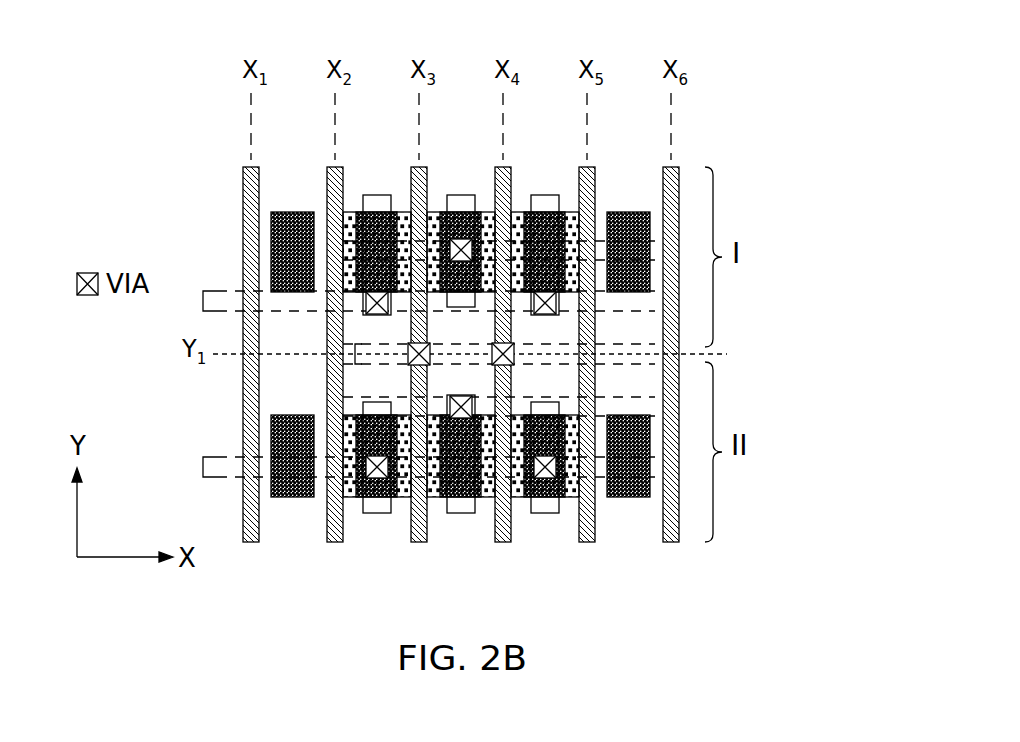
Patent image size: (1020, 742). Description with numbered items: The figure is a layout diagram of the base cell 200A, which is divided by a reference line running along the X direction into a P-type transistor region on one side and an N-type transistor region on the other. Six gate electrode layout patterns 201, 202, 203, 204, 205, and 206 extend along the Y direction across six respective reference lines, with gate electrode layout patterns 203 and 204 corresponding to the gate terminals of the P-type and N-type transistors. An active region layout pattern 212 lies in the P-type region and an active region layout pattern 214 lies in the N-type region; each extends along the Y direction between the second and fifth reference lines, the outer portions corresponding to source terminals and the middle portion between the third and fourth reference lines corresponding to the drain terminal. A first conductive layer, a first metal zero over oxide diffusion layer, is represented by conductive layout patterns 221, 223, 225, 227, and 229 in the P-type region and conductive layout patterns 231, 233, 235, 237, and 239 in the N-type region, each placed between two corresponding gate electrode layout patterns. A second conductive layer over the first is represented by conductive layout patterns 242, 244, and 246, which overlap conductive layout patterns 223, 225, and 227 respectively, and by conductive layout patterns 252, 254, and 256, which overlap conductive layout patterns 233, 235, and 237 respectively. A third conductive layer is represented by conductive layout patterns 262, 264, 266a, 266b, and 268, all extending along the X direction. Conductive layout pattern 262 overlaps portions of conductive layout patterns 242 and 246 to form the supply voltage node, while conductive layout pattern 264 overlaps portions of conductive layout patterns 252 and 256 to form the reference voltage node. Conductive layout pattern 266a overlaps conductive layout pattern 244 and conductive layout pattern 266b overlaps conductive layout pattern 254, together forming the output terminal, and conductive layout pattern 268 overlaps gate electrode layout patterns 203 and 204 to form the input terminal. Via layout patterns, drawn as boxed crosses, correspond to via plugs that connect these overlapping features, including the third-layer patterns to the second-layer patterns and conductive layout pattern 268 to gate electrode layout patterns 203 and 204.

The base cell 200A is at (751, 96).
The gate electrode layout pattern 201 is at (251, 542).
The gate electrode layout pattern 202 is at (335, 542).
The gate electrode layout pattern 203 is at (419, 542).
The gate electrode layout pattern 204 is at (503, 542).
The gate electrode layout pattern 205 is at (587, 542).
The gate electrode layout pattern 206 is at (671, 542).
The active region layout pattern 212 is at (348, 210).
The active region layout pattern 214 is at (350, 497).
The conductive layout pattern 221 is at (294, 210).
The conductive layout pattern 229 is at (628, 210).
The conductive layout pattern 231 is at (291, 498).
The conductive layout pattern 239 is at (627, 498).
The conductive layout pattern 223 is at (391, 210).
The conductive layout pattern 225 is at (477, 210).
The conductive layout pattern 227 is at (561, 210).
The conductive layout pattern 233 is at (397, 513).
The conductive layout pattern 235 is at (477, 513).
The conductive layout pattern 237 is at (562, 513).
The conductive layout pattern 242 is at (376, 200).
The conductive layout pattern 244 is at (458, 198).
The conductive layout pattern 246 is at (543, 198).
The conductive layout pattern 252 is at (375, 404).
The conductive layout pattern 254 is at (447, 396).
The conductive layout pattern 256 is at (548, 404).
The conductive layout pattern 262 is at (212, 290).
The conductive layout pattern 264 is at (212, 456).
The conductive layout pattern 266a is at (600, 248).
The conductive layout pattern 266b is at (630, 404).
The conductive layout pattern 268 is at (377, 348).